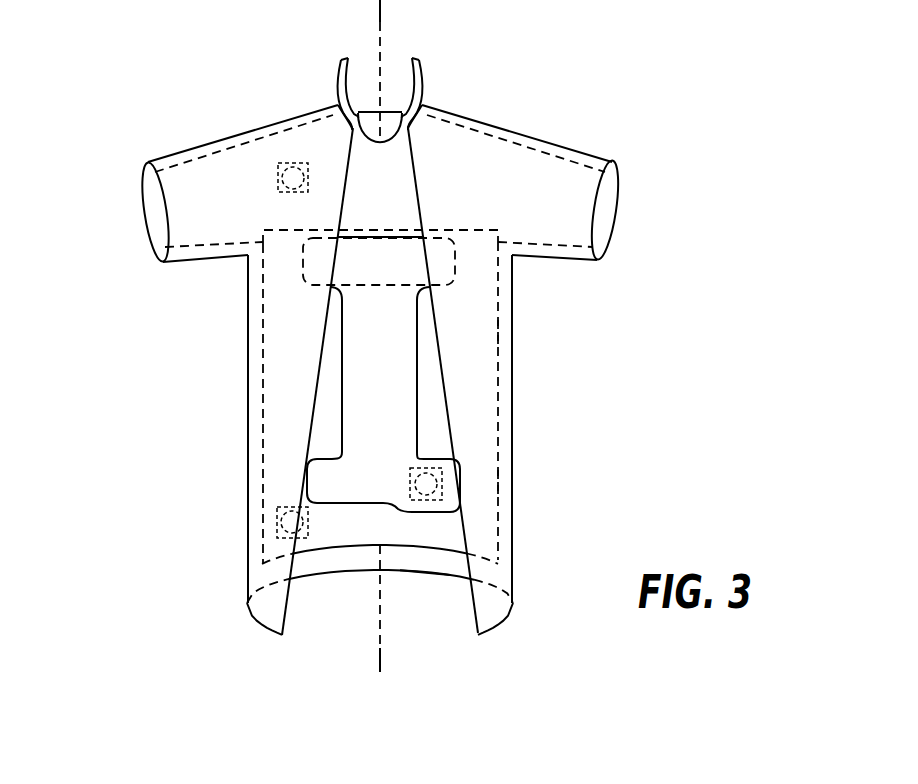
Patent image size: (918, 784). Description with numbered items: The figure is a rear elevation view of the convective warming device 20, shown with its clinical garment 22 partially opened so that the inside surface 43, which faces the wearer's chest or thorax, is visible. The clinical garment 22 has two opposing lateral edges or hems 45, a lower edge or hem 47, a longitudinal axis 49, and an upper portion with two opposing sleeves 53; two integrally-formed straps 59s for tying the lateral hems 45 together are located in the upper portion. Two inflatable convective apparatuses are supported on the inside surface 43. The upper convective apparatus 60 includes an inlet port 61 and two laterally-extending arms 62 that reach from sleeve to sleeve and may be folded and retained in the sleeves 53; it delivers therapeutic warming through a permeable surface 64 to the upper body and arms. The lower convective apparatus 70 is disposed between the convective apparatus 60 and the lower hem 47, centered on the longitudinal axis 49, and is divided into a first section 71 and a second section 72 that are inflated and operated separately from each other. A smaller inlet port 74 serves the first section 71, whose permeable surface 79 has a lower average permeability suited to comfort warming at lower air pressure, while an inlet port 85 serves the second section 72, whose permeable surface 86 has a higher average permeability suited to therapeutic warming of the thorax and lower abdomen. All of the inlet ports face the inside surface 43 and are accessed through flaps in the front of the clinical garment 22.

The convective warming device 20 is at (150, 367).
The clinical garment 22 is at (248, 420).
The inside surface 43 is at (437, 563).
The lateral edges or hems 45 is at (442, 383).
The lower edge or hem 47 is at (325, 577).
The longitudinal axis 49 is at (380, 25).
The sleeves 53 is at (381, 199).
The integrally-formed straps 59s is at (333, 82).
The convective apparatus 60 is at (583, 168).
The inlet port 61 is at (278, 178).
The laterally-extending arms 62 is at (175, 202).
The permeable surface 64 is at (367, 381).
The convective apparatus 70 is at (499, 333).
The first section 71 is at (455, 272).
The second section 72 is at (499, 483).
The inlet port 74 is at (410, 485).
The permeable surface 79 is at (395, 378).
The inlet port 85 is at (277, 523).
The permeable surface 86 is at (482, 448).